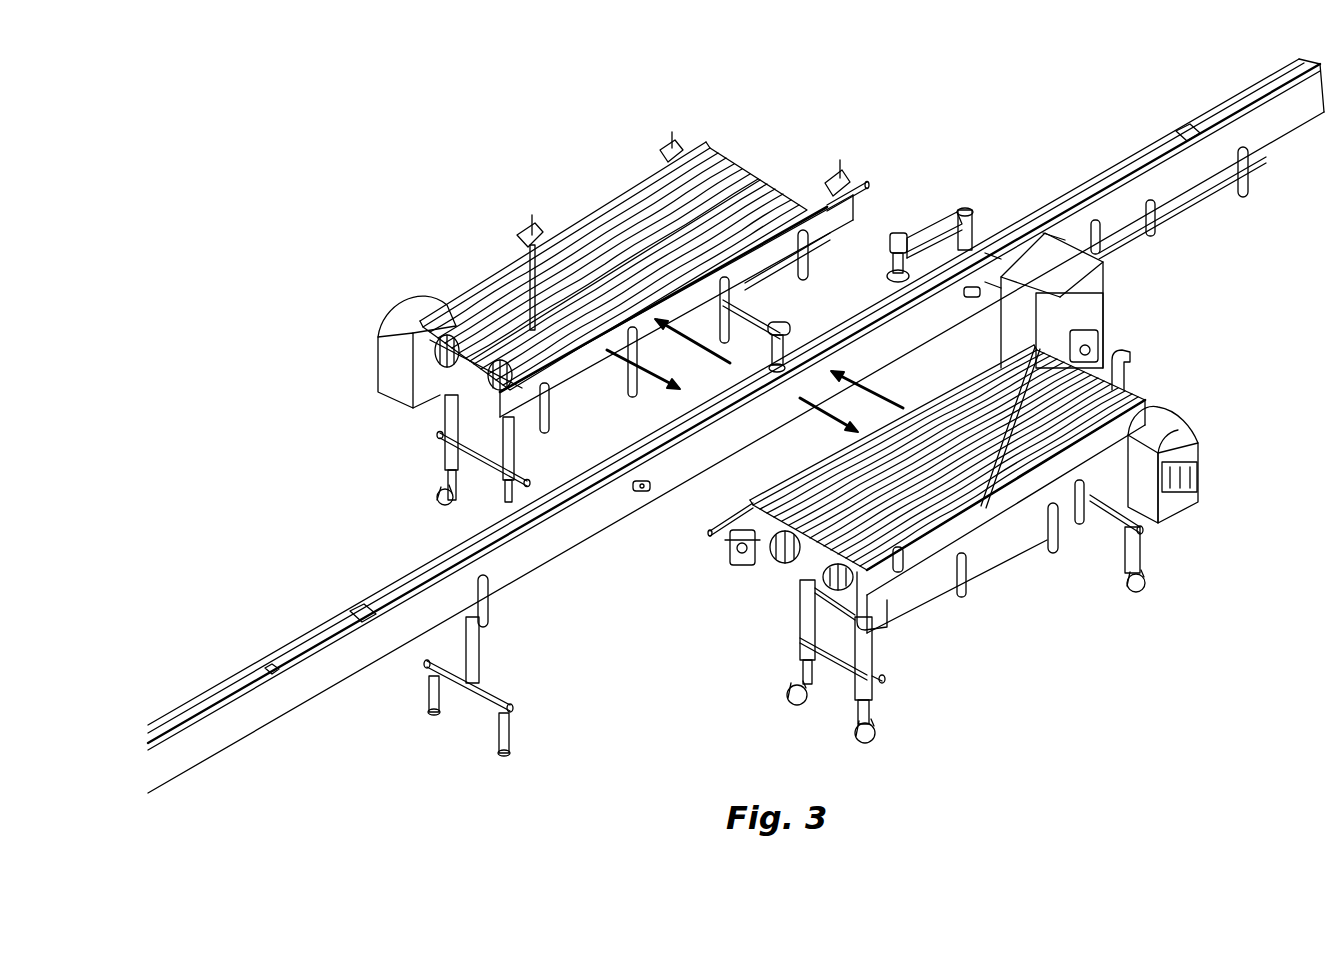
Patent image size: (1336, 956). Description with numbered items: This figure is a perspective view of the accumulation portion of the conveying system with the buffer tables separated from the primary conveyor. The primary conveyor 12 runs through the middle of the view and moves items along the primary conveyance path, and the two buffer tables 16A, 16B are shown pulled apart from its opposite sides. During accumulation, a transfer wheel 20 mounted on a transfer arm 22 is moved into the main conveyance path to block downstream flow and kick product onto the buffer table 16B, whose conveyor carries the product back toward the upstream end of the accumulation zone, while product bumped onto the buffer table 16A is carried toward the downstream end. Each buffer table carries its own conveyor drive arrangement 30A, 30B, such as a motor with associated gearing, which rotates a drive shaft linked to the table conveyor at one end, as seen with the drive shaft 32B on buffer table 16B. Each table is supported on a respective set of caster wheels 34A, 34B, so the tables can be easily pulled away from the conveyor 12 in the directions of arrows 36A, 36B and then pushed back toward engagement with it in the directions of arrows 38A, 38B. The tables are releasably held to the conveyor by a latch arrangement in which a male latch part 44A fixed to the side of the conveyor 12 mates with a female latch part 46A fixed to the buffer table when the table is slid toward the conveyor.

The primary conveyor 12 is at (563, 535).
The buffer table 16A is at (1075, 500).
The buffer table 16B is at (595, 208).
The transfer wheel 20 is at (893, 280).
The transfer arm 22 is at (927, 237).
The conveyor drive arrangement 30A is at (1190, 438).
The conveyor drive arrangement 30B is at (387, 330).
The drive shaft 32B is at (473, 360).
The wheels 34A is at (1152, 572).
The wheels 34B is at (427, 500).
The arrow 36A is at (806, 408).
The arrow 36B is at (730, 362).
The arrow 38A is at (880, 395).
The arrow 38B is at (625, 388).
The male latch part 44A is at (976, 297).
The female latch part 46A is at (757, 562).